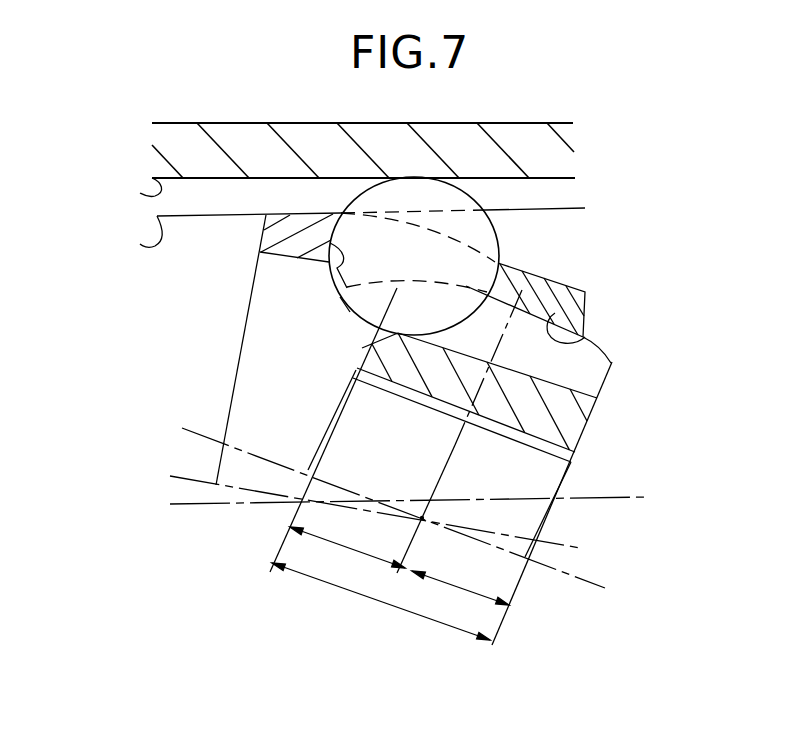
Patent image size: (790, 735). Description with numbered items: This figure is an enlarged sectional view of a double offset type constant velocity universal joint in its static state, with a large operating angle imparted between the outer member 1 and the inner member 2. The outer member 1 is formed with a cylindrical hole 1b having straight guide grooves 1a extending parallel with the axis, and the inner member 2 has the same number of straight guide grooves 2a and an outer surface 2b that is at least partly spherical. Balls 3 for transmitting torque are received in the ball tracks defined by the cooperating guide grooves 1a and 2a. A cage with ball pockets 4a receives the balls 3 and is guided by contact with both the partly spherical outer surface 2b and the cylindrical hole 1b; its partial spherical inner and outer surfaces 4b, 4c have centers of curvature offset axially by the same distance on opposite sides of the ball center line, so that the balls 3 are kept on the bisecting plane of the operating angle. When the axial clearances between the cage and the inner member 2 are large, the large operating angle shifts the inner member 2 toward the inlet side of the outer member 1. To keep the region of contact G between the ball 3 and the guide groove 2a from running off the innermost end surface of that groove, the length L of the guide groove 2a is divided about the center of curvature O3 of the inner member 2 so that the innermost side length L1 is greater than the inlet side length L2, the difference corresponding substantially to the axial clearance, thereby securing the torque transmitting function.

The outer member 1 is at (549, 143).
The straight guide grooves 1a is at (140, 193).
The cylindrical hole 1b is at (140, 244).
The inner member 2 is at (357, 372).
The straight guide grooves 2a is at (572, 395).
The outer surface 2b is at (612, 355).
The balls 3 is at (478, 243).
The ball pockets 4a is at (335, 258).
The partial spherical inner surface 4b is at (583, 335).
The partial spherical outer surface 4c is at (560, 272).
The region of contact G is at (383, 312).
The center of curvature O3 is at (422, 518).
The length of the guide groove L is at (376, 598).
The innermost side length L1 is at (328, 541).
The inlet side length L2 is at (472, 598).